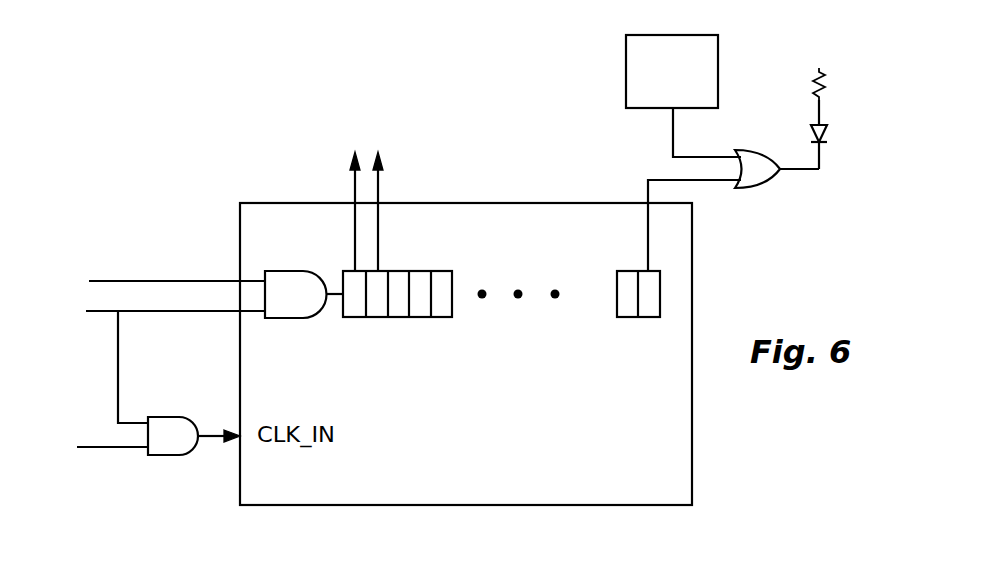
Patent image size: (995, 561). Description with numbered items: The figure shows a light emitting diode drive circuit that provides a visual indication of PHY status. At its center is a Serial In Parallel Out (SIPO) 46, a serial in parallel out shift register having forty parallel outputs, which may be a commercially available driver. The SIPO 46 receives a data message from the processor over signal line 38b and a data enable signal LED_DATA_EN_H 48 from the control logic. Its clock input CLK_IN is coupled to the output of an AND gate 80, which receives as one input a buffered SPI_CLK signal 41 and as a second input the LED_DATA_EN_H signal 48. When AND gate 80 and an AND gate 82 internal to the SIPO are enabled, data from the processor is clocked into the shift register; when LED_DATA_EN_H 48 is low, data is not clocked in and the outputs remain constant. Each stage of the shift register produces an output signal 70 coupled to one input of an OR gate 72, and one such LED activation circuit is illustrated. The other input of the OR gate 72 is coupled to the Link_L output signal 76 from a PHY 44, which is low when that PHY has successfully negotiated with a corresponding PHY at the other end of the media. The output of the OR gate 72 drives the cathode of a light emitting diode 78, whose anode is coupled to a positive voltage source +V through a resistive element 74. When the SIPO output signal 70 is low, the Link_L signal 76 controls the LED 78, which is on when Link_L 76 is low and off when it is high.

The signal line 38b is at (228, 280).
The LED_DATA_EN_H data enable signal 48 is at (150, 312).
The buffered SPI_CLK signal 41 is at (108, 447).
The AND gate 80 is at (194, 436).
The AND gate 82 is at (304, 294).
The Serial In Parallel Out (SIPO) 46 is at (476, 264).
The PHY 44 is at (672, 71).
The resistive element 74 is at (698, 71).
The Link_L output signal 76 is at (673, 118).
The SIPO output signal 70 is at (642, 192).
The OR gate 72 is at (777, 169).
The light emitting diode (LED) 78 is at (822, 144).